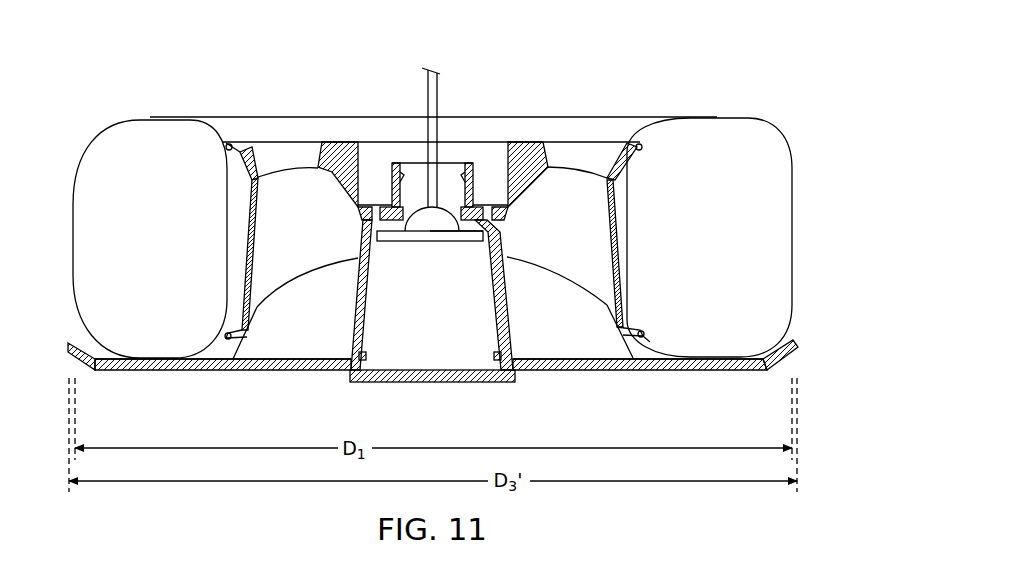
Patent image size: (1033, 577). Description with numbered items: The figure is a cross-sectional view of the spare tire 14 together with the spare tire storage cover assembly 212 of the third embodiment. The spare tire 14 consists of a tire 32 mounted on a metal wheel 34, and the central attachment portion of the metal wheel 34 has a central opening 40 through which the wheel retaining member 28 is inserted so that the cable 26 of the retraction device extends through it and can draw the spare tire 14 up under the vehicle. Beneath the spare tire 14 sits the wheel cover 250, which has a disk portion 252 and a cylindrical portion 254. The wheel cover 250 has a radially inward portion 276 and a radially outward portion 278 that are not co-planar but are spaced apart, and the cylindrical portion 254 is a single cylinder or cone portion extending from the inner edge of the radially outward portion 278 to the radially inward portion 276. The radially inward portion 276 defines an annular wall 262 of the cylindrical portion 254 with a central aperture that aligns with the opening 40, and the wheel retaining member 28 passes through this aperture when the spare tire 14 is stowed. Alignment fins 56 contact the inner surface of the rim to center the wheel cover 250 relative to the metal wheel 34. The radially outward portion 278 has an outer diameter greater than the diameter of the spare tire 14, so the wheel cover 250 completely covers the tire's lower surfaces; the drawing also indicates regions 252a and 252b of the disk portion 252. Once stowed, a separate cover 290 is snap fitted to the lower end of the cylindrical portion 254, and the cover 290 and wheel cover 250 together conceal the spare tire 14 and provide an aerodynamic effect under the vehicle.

The spare tire storage cover assembly 212 is at (186, 62).
The cable 26 is at (426, 90).
The central opening 40 is at (463, 185).
The metal wheel 34 is at (526, 160).
The spare tire 14 is at (662, 115).
The tire 32 is at (746, 154).
The alignment fins 56 is at (325, 293).
The cylindrical portion 254 is at (505, 284).
The radially inward portion 276 is at (389, 233).
The wheel retaining member 28 is at (431, 241).
The annular wall 262 is at (482, 233).
The base plate top surface 252a is at (292, 358).
The base plate bottom 252b is at (270, 372).
The cover 290 is at (409, 383).
The disk portion 252 is at (589, 371).
The wheel cover 250 is at (660, 362).
The radially outward portion 278 is at (728, 371).